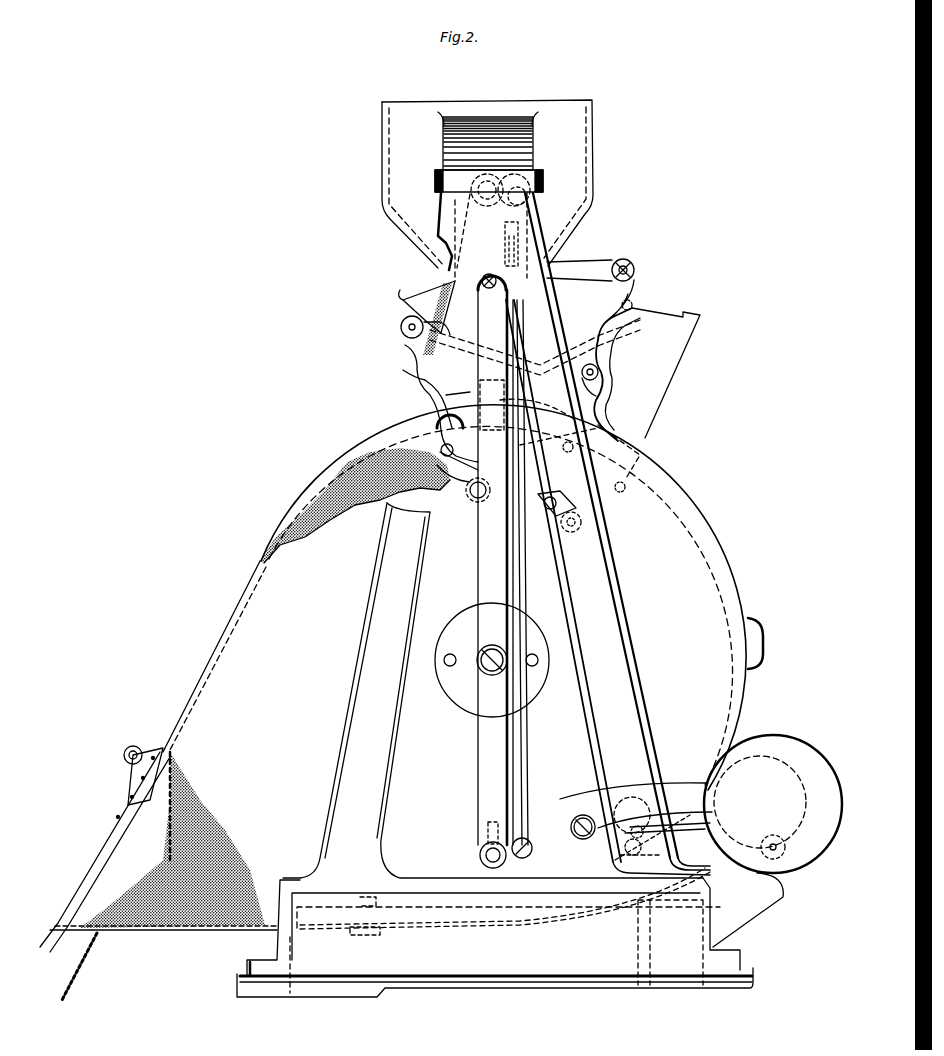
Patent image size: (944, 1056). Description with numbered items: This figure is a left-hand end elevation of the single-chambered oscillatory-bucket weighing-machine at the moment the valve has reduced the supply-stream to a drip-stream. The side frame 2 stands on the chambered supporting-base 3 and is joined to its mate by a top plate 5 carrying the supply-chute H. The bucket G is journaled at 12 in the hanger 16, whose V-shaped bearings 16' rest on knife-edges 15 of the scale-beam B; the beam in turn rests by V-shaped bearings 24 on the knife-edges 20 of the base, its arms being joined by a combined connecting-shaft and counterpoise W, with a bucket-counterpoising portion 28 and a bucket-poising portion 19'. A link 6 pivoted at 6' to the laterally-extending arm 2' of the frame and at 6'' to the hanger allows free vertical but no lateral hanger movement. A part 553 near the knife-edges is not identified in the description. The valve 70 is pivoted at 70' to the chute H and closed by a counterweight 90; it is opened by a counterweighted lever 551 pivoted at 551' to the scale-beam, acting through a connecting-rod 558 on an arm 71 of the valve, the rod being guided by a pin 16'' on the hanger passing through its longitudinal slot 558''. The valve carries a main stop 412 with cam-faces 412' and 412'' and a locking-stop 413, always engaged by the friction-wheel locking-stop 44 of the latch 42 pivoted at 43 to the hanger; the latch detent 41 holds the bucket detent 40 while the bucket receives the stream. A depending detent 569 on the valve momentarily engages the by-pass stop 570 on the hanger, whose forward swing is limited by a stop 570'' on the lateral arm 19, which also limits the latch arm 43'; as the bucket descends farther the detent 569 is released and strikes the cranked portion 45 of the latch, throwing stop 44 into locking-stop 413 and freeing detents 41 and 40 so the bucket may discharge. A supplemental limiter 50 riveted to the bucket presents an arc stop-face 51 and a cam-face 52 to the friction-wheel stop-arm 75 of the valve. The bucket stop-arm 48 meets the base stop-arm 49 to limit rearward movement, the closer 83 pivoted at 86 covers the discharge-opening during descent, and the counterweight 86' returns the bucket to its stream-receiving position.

The supply-chute H is at (487, 184).
The top plate 5 is at (462, 160).
The arm 71 is at (546, 187).
The valve pivot 70' is at (515, 175).
The valve 70 is at (530, 271).
The longitudinal slot 558'' is at (493, 244).
The pin 16'' is at (488, 249).
The connecting-rod 558 is at (616, 531).
The hanger 16 is at (479, 560).
The link pivot 6'' is at (476, 288).
The bucket-poising portion 19' is at (608, 587).
The knife-edges 15 is at (480, 858).
The V-shaped bearings 16' is at (470, 833).
The pivot screw 553 is at (537, 844).
The lever pivot 551' is at (571, 802).
The knife-edges 20 is at (614, 849).
The bucket journal 12 is at (481, 651).
The bucket G is at (454, 597).
The counterweight 86' is at (773, 643).
The side frame 2 is at (493, 690).
The stop-arm 48 is at (372, 936).
The stop-arm 49 is at (376, 902).
The supporting-base 3 is at (462, 950).
The combined connecting-shaft and counterpoise W is at (776, 755).
The lever 551 is at (752, 855).
The scale-beam B is at (660, 788).
The V-shaped bearings 24 is at (655, 820).
The bucket-counterpoising portion 28 is at (680, 836).
The closer 83 is at (92, 866).
The closer pivot 86 is at (140, 773).
The link 6 is at (579, 258).
The link pivot 6' is at (635, 262).
The laterally-extending arm 2' is at (635, 301).
The counterweight 90 is at (634, 307).
The locking-stop 413 is at (618, 334).
The locking-stop 44 is at (592, 402).
The main stop 412 is at (609, 365).
The cam-face 412'' is at (613, 382).
The cam-face 412' is at (535, 375).
The latch 42 is at (524, 457).
The detent 41 is at (528, 500).
The detent 40 is at (580, 519).
The cranked portion 45 is at (406, 366).
The detent 569 is at (446, 395).
The laterally-extended arm 19 is at (450, 411).
The by-pass stop 570 is at (412, 436).
The by-pass limiting-stop 570'' is at (423, 453).
The arm 43' is at (436, 482).
The latch pivot 43 is at (460, 493).
The stop-face 51 is at (436, 283).
The supplemental limiter 50 is at (428, 300).
The cam-face 52 is at (401, 327).
The stop-arm 75 is at (421, 333).